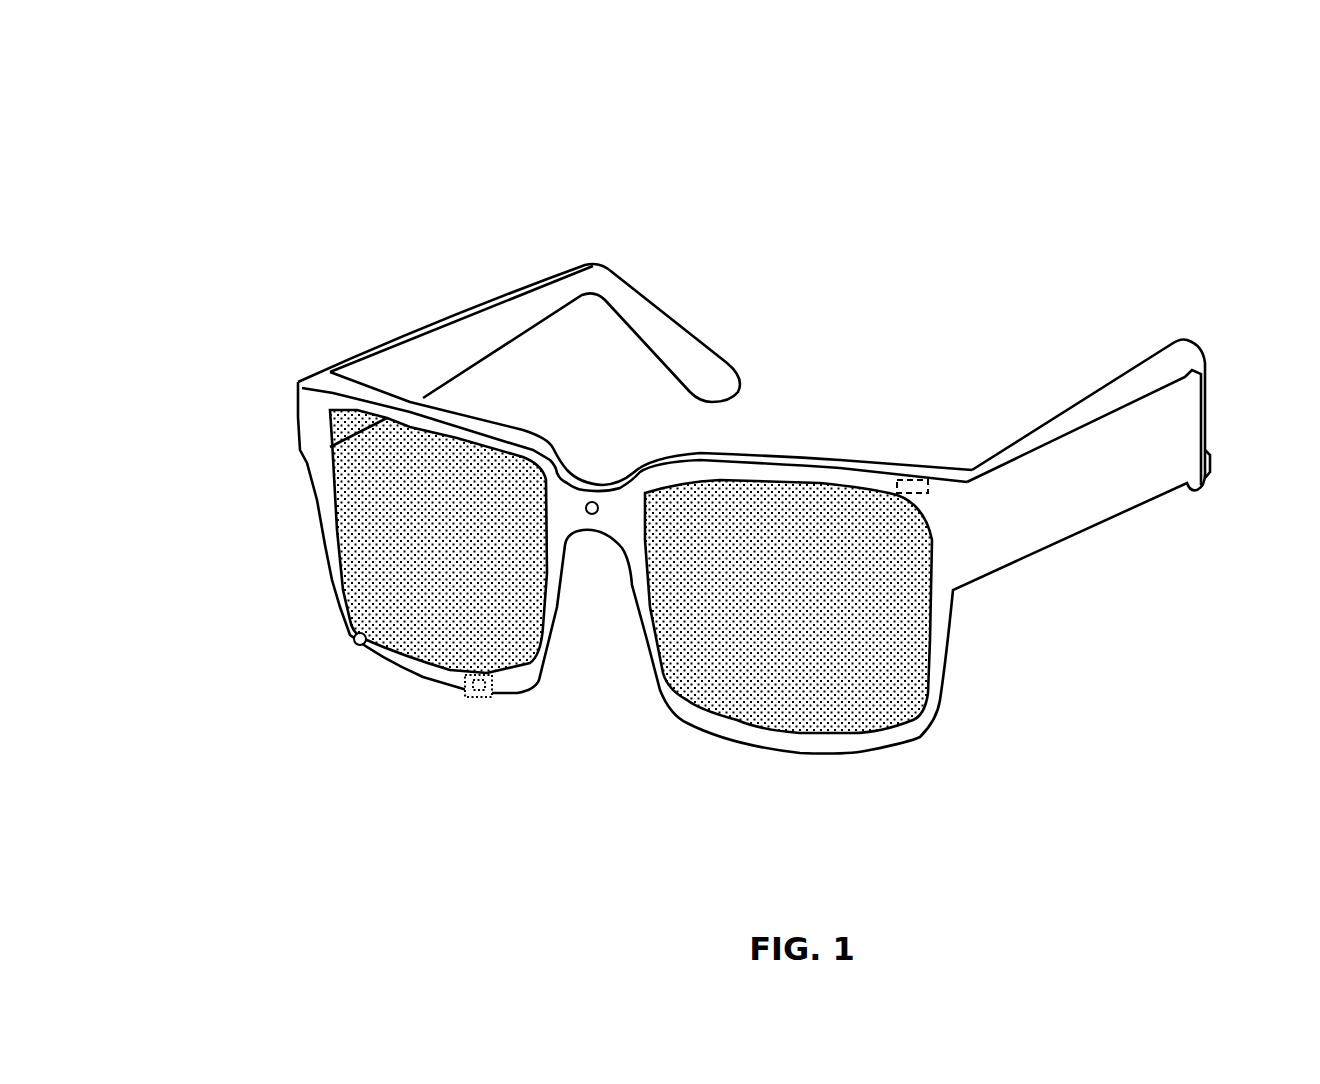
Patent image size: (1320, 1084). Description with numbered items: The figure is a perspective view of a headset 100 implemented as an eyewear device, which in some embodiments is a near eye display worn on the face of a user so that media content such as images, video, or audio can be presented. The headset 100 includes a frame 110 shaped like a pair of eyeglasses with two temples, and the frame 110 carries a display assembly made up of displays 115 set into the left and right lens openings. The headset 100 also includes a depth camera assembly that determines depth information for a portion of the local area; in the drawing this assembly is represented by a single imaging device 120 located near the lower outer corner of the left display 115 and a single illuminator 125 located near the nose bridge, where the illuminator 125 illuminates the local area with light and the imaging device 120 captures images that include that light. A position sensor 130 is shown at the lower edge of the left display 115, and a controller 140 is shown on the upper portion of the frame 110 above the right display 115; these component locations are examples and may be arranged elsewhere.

The headset 100 is at (197, 92).
The frame 110 is at (1187, 340).
The display 115 is at (380, 542).
The imaging device 120 is at (353, 644).
The illuminator 125 is at (592, 514).
The position sensor 130 is at (478, 687).
The controller 140 is at (908, 483).